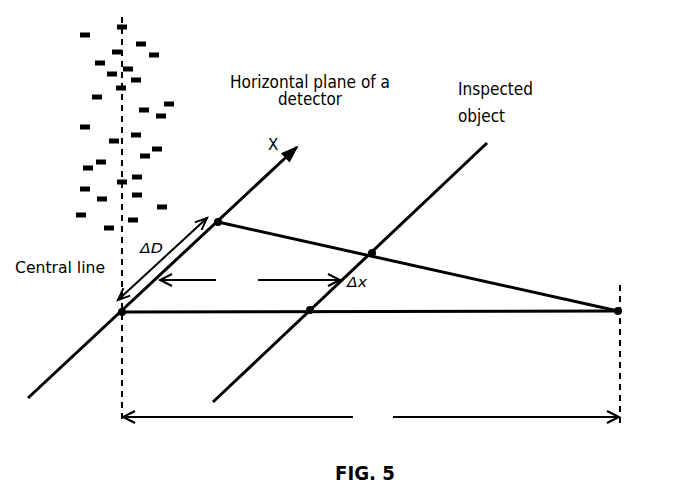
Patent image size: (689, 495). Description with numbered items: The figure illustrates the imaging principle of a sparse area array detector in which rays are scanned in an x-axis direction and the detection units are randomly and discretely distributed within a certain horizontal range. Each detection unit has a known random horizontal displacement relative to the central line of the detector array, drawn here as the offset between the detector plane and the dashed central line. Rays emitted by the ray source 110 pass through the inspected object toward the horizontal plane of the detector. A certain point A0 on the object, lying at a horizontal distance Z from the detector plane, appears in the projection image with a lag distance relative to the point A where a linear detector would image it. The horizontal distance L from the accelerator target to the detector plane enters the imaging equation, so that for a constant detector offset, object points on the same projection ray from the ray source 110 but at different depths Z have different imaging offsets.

The ray source 110 is at (437, 274).
The point A is at (385, 250).
The point A_0 A0 is at (320, 324).
The horizontal distance Z is at (250, 280).
The horizontal distance L is at (371, 416).